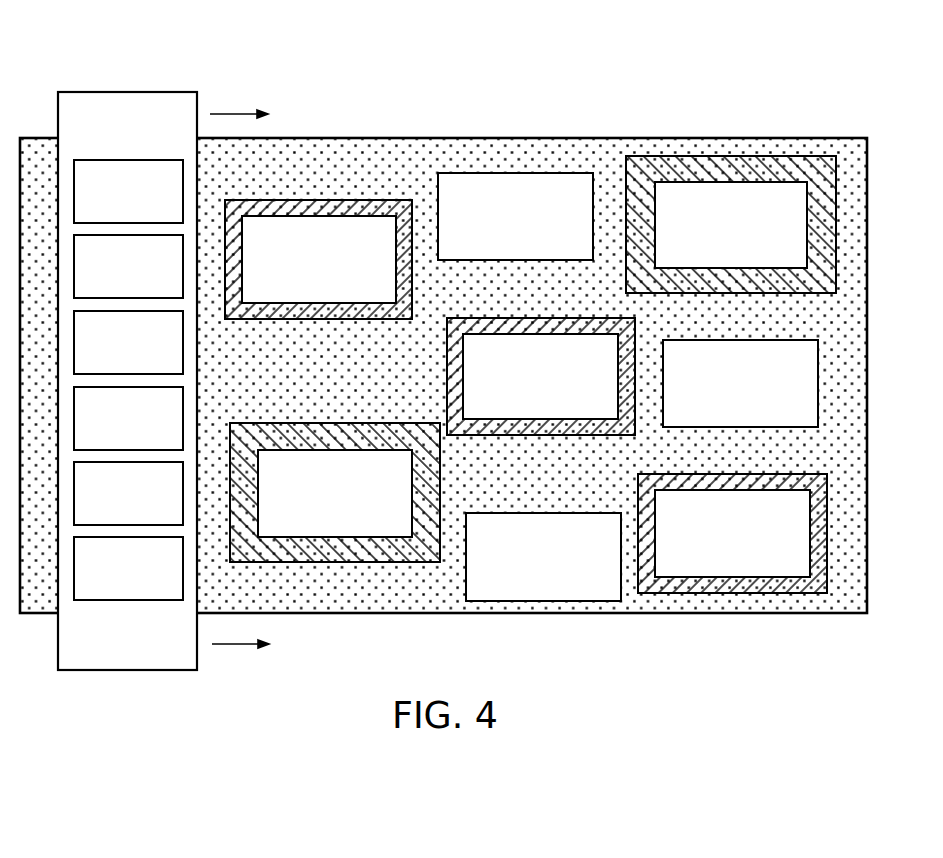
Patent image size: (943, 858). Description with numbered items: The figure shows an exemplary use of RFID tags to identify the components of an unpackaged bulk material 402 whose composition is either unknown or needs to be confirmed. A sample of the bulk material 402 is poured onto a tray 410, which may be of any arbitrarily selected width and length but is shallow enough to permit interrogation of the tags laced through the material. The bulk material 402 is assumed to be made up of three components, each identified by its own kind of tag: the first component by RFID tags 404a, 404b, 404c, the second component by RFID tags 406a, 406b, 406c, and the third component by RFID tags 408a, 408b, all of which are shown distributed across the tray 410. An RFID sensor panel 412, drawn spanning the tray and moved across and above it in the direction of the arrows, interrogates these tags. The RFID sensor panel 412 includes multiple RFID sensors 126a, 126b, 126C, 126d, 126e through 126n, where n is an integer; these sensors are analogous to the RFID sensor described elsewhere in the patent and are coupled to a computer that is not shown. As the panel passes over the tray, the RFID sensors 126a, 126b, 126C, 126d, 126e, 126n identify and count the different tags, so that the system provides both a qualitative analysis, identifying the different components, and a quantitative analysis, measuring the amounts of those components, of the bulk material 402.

The bulk material 402 is at (243, 602).
The tray 410 is at (608, 137).
The RFID sensor panel 412 is at (125, 92).
The RFID sensor 126a is at (101, 205).
The RFID sensor 126b is at (101, 280).
The RFID sensor 126C is at (101, 356).
The RFID sensor 126d is at (101, 432).
The RFID sensor 126e is at (101, 507).
The RFID sensor 126n is at (101, 582).
The RFID tag 404a is at (484, 247).
The RFID tag 404b is at (512, 587).
The RFID tag 404c is at (709, 414).
The RFID tag 406a is at (288, 289).
The RFID tag 406b is at (509, 407).
The RFID tag 406c is at (701, 563).
The RFID tag 408a is at (304, 523).
The RFID tag 408b is at (700, 255).